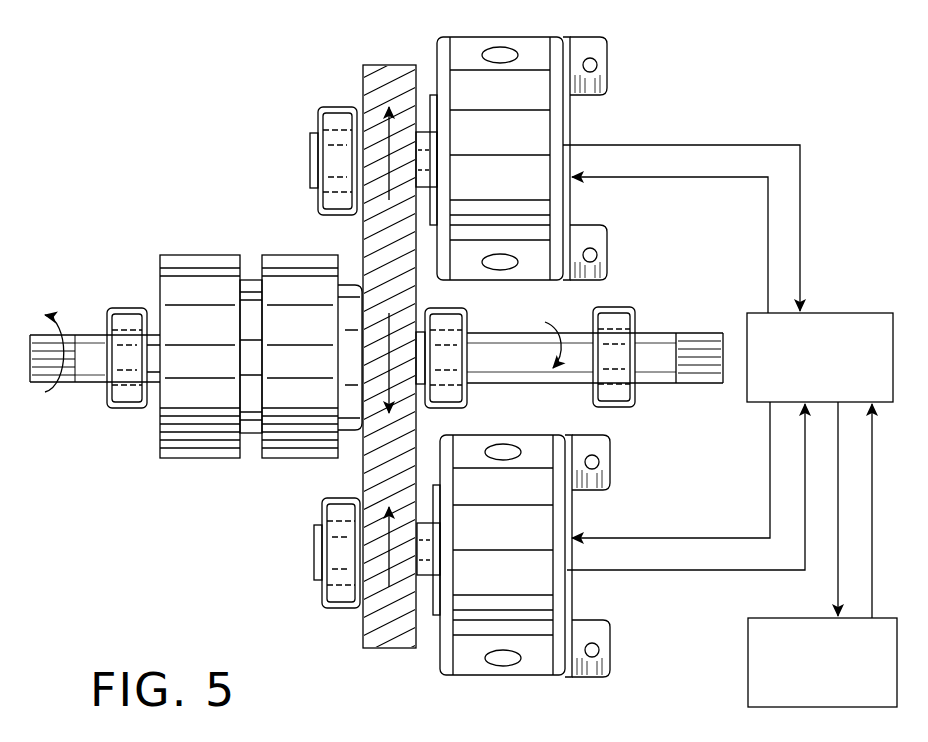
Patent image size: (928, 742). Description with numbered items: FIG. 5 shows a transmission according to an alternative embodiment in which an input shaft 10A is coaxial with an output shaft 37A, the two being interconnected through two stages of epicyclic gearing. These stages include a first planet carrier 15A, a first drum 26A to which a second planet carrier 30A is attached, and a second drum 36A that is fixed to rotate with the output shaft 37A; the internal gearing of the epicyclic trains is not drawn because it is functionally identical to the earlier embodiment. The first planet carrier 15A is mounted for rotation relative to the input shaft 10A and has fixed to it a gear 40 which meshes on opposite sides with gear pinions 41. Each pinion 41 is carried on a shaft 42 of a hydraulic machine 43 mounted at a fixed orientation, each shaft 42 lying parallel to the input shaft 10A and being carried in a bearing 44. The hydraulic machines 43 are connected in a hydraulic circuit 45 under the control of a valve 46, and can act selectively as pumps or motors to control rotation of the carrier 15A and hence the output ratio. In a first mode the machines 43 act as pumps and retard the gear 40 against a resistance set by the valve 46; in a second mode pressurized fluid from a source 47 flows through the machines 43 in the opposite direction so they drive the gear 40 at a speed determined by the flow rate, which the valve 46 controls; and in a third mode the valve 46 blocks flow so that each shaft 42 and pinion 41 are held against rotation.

The input shaft 10A is at (699, 330).
The first planet carrier 15A is at (350, 284).
The first drum 26A is at (305, 454).
The second planet carrier 30A is at (249, 284).
The second drum 36A is at (162, 287).
The output shaft 37A is at (92, 384).
The gear 40 is at (419, 428).
The gear pinion 41 is at (361, 64).
The shaft 42 is at (426, 150).
The hydraulic machine 43 is at (553, 117).
The bearing 44 is at (317, 110).
The hydraulic circuit 45 is at (771, 134).
The valve 46 is at (841, 310).
The source of pressurized fluid 47 is at (746, 660).